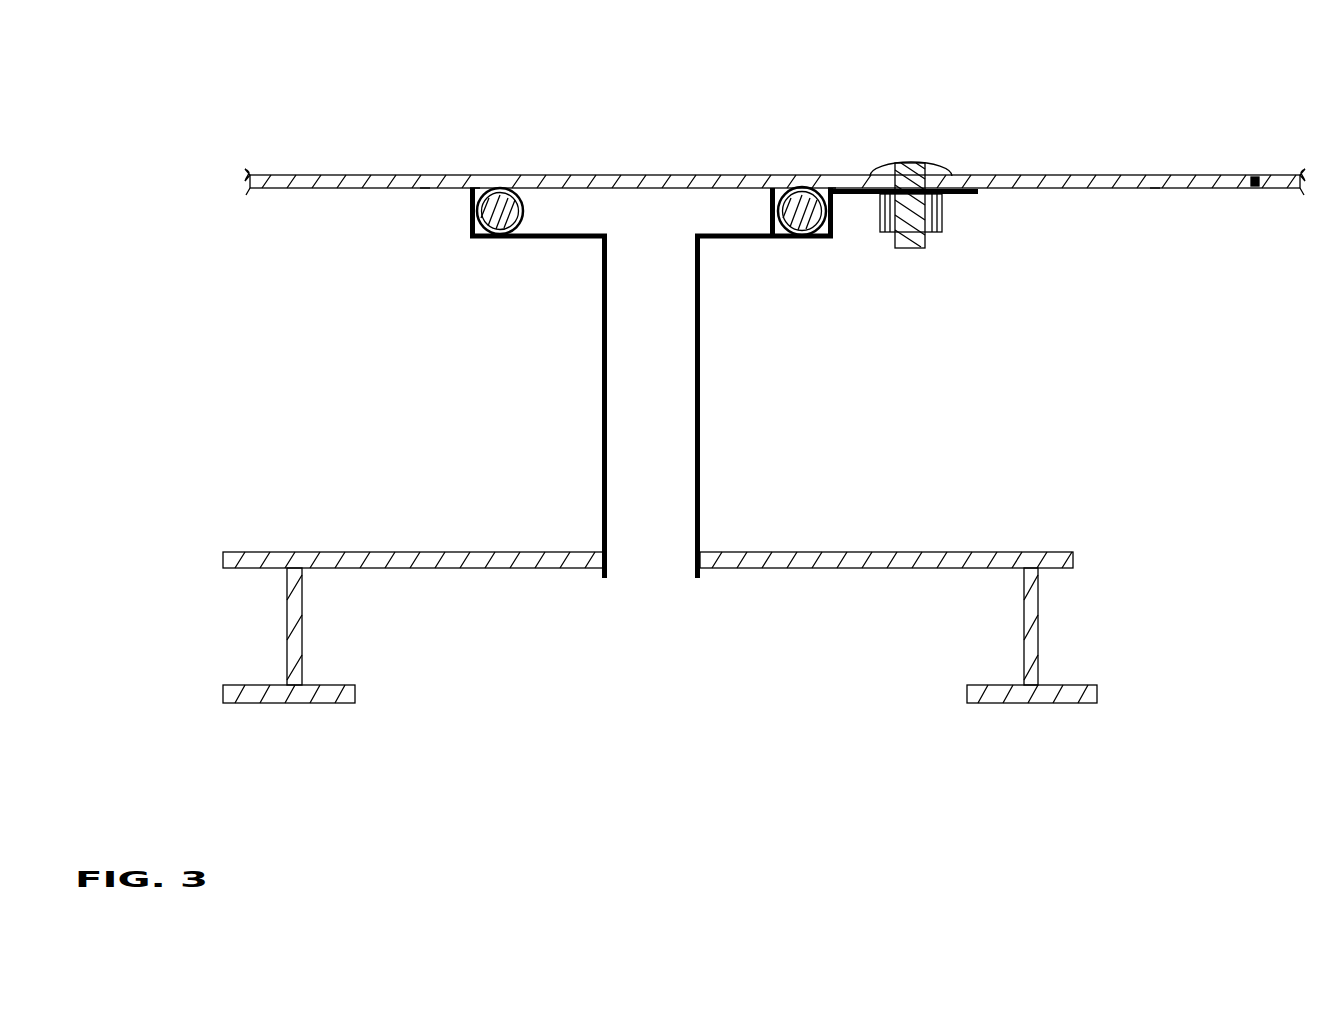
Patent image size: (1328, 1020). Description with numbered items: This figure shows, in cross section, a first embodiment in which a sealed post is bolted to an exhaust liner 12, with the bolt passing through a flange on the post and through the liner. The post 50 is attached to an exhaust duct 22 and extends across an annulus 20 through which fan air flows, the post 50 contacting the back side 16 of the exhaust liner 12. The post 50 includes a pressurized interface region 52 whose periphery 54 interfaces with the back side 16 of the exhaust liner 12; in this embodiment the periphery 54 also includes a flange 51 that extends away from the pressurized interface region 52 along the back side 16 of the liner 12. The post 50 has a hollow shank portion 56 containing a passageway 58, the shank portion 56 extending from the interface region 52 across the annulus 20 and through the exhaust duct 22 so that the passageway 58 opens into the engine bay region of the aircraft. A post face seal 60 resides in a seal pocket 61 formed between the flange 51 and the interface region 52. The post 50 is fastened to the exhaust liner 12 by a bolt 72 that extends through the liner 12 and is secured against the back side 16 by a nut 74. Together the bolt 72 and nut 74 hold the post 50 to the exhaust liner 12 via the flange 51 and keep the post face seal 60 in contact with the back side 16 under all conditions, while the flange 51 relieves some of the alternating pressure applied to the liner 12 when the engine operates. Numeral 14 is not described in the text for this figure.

The exhaust liner 12 is at (1257, 178).
The top plate 14 is at (1188, 176).
The back side 16 is at (423, 190).
The annulus 20 is at (308, 370).
The exhaust duct 22 is at (750, 568).
The post 50 is at (764, 383).
The flange 51 is at (960, 192).
The pressurized interface region 52 is at (572, 238).
The periphery 54 is at (475, 175).
The shank portion 56 is at (700, 405).
The passageway 58 is at (662, 414).
The post face seal 60 is at (490, 232).
The seal pocket 61 is at (803, 235).
The bolt 72 is at (925, 165).
The nut 74 is at (940, 222).